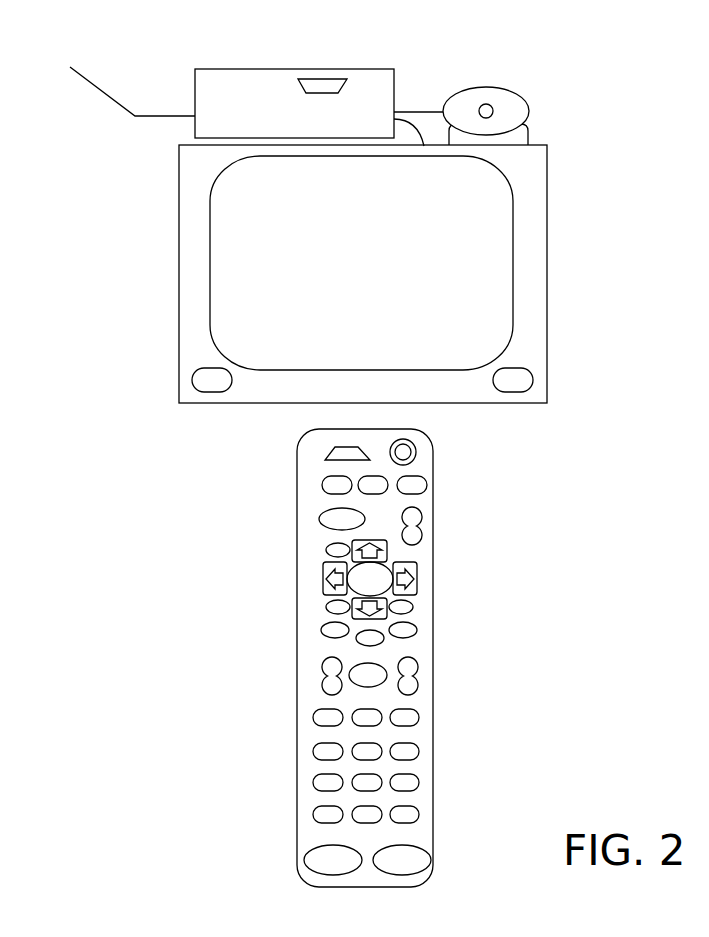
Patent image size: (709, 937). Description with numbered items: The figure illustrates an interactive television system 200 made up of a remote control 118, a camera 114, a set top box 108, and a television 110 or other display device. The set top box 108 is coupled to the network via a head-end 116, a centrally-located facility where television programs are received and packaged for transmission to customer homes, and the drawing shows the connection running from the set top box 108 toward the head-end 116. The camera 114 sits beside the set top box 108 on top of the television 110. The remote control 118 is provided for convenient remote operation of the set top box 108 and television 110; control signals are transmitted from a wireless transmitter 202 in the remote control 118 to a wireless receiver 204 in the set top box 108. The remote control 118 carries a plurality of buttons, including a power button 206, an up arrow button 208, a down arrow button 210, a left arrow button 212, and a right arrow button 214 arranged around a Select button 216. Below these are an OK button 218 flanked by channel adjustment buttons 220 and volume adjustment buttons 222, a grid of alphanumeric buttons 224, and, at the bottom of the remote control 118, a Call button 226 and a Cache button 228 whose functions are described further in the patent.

The interactive television system 200 is at (646, 58).
The set top box 108 is at (319, 107).
The wireless receiver 204 is at (334, 78).
The head-end 116 is at (113, 70).
The camera 114 is at (529, 107).
The television 110 is at (363, 274).
The remote control 118 is at (444, 661).
The wireless transmitter 202 is at (333, 452).
The power button 206 is at (417, 450).
The up arrow button 208 is at (388, 548).
The down arrow button 210 is at (353, 613).
The left arrow button 212 is at (325, 577).
The right arrow button 214 is at (417, 577).
The Select button 216 is at (389, 562).
The OK button 218 is at (372, 663).
The channel adjustment buttons 220 is at (322, 687).
The volume adjustment buttons 222 is at (418, 682).
The alphanumeric buttons 224 is at (317, 703).
The Call button 226 is at (305, 862).
The Cache button 228 is at (430, 862).